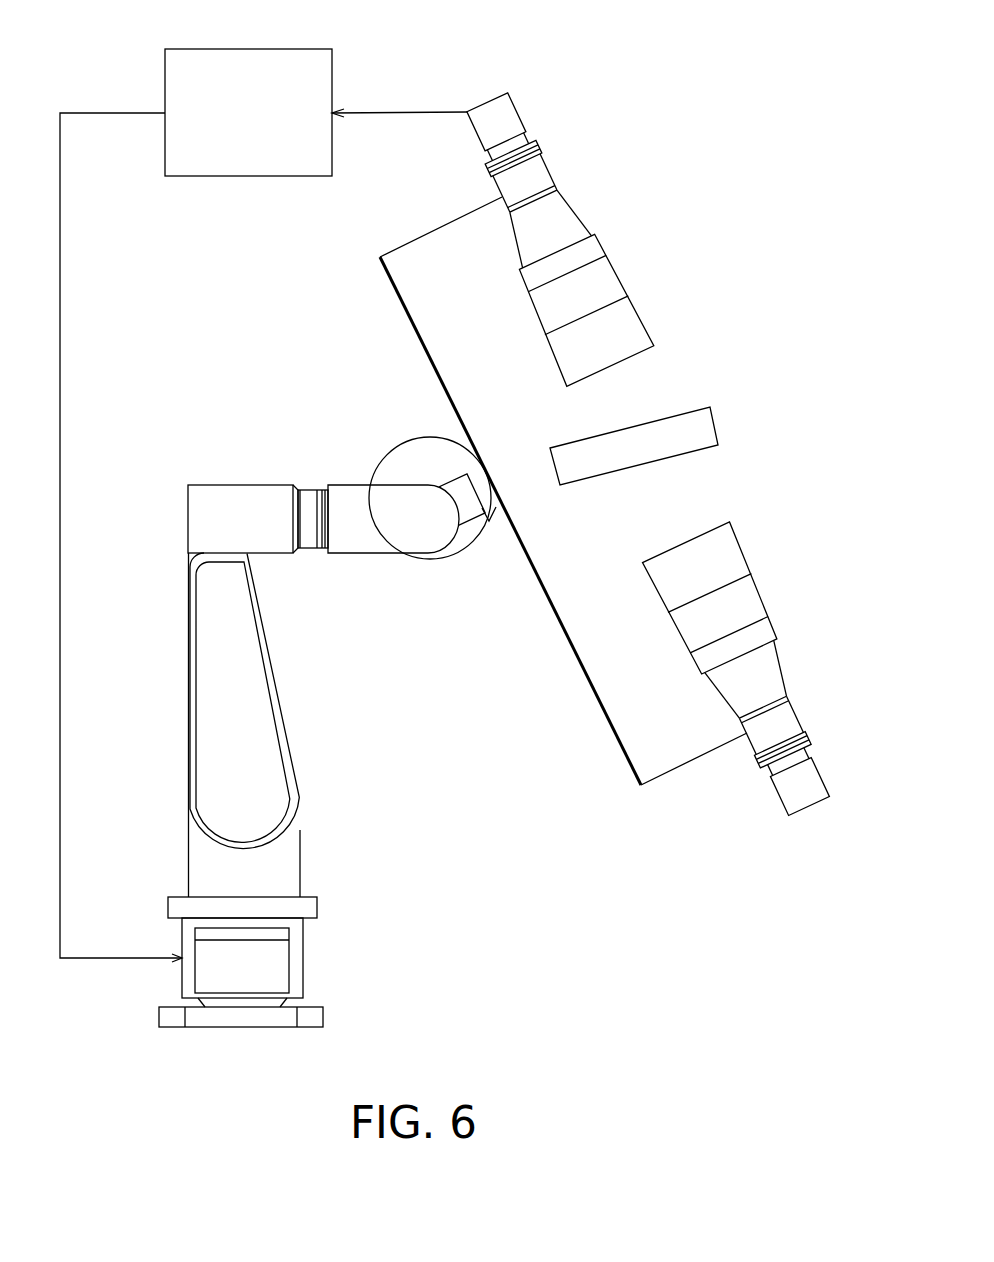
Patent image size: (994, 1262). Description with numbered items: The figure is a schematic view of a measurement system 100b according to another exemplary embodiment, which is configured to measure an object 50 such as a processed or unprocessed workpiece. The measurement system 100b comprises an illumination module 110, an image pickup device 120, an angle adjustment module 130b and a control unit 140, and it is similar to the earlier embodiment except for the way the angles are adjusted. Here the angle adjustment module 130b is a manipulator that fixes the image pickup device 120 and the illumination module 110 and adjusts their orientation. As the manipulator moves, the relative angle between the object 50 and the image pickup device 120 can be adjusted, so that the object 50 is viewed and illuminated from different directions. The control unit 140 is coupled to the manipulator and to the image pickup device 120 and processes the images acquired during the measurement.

The control unit 140 is at (332, 65).
The image pickup device 120 is at (605, 280).
The illumination module 110 is at (692, 558).
The object 50 is at (702, 420).
The angle adjustment module 130b is at (245, 657).
The measurement system 100b is at (800, 1106).